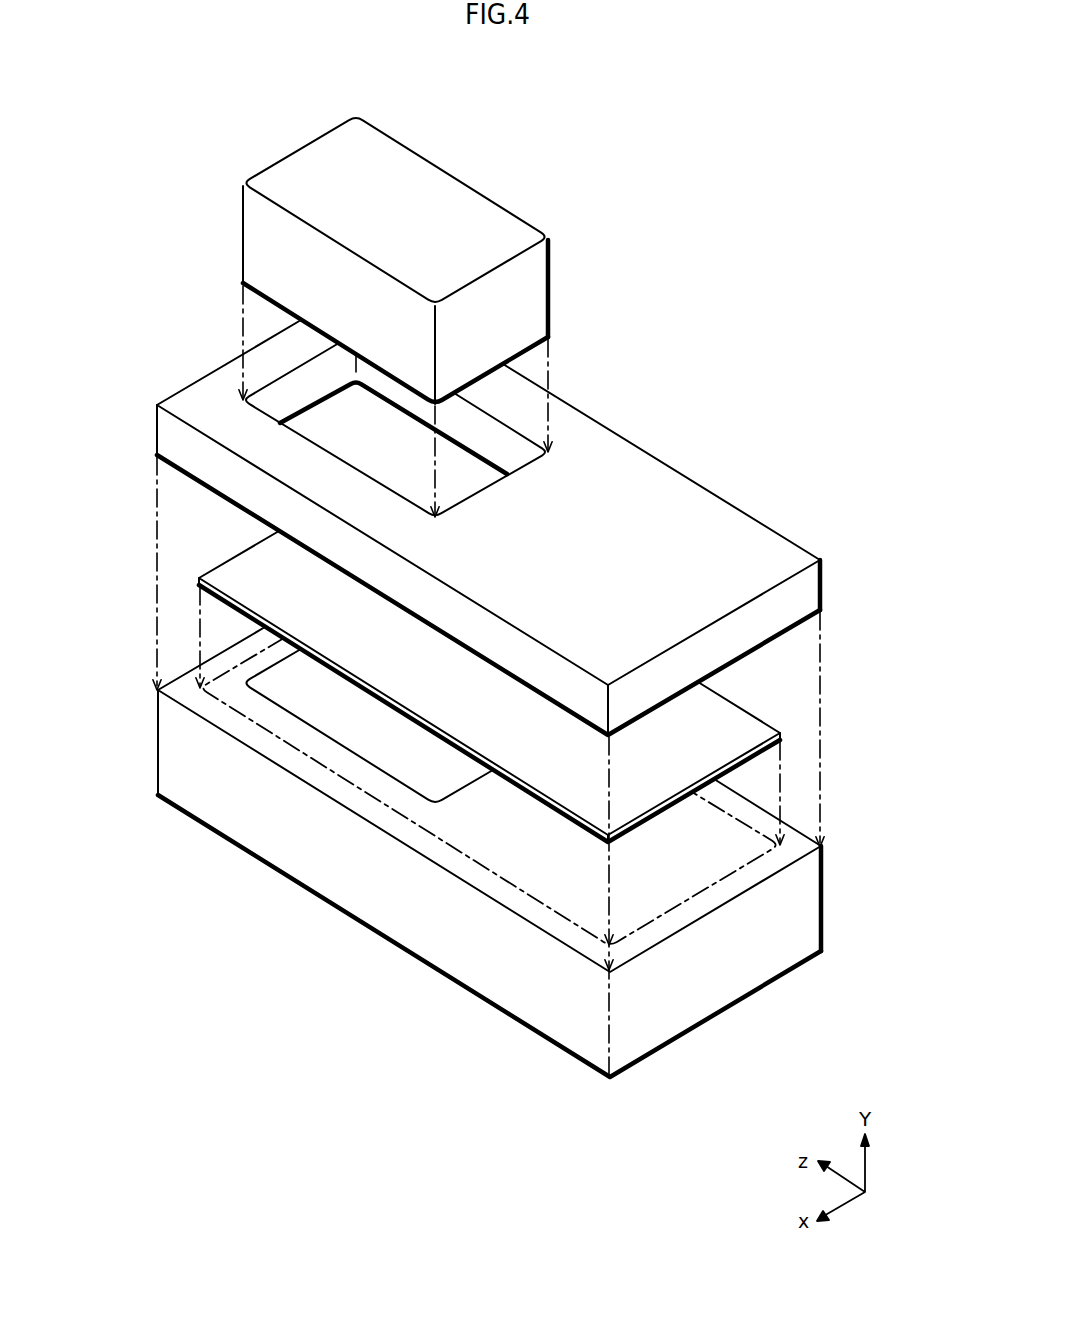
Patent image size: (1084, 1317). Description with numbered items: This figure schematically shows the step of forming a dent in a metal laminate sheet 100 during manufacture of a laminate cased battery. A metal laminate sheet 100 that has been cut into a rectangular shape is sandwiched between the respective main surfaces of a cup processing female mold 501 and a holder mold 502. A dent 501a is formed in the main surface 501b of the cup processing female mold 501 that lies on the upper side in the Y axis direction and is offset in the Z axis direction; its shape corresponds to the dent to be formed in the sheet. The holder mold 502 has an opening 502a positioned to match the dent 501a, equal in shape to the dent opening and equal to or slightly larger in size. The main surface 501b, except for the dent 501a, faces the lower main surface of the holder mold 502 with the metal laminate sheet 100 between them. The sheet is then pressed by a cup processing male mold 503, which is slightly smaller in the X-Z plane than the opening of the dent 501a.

The cup processing male mold 503 is at (507, 230).
The holder mold 502 is at (720, 530).
The opening 502a is at (498, 443).
The metal laminate sheet 100 is at (720, 707).
The cup processing female mold 501 is at (800, 907).
The dent 501a is at (290, 691).
The main surface 501b is at (733, 843).